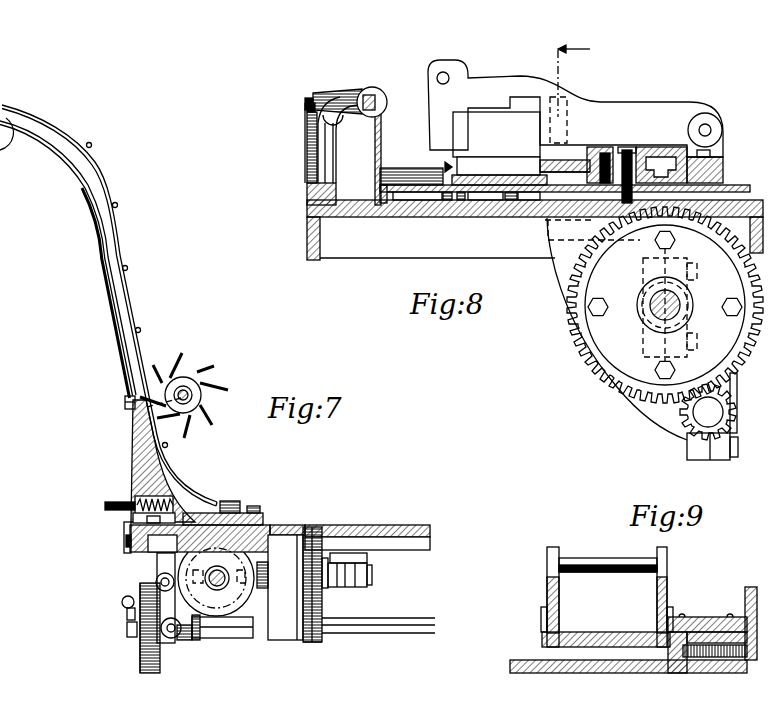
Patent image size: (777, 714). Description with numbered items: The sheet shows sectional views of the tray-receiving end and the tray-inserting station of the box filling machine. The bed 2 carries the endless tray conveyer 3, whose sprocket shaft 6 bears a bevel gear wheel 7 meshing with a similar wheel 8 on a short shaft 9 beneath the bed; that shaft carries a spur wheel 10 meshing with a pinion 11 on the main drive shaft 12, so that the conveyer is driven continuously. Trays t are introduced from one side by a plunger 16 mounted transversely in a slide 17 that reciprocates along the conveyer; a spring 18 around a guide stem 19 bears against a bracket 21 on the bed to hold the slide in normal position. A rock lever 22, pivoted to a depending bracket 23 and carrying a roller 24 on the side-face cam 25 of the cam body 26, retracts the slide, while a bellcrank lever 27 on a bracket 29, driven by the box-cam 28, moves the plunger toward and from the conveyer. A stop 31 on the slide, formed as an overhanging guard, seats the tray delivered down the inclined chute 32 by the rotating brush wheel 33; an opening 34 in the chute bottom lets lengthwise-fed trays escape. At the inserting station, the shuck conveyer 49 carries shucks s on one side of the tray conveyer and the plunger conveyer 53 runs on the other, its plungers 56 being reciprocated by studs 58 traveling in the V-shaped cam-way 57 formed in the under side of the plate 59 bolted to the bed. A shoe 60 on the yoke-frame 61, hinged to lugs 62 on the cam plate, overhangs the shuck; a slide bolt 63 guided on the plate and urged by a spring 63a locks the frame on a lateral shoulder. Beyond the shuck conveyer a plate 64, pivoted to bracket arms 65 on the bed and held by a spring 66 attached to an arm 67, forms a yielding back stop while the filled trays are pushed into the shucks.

In FIG. 7, the bed 2 is at (350, 525).
In FIG. 8, the bed 2 is at (307, 228).
In FIG. 8, the tray conveyer 3 is at (493, 157).
In FIG. 7, the shaft 6 is at (217, 584).
In FIG. 7, the bevel gear wheel 7 is at (240, 603).
In FIG. 7, the bevel gear wheel 8 is at (260, 600).
In FIG. 7, the short shaft 9 is at (374, 580).
In FIG. 8, the short shaft 9 is at (681, 307).
In FIG. 7, the spur wheel 10 is at (315, 527).
In FIG. 8, the spur wheel 10 is at (574, 279).
In FIG. 7, the pinion 11 is at (317, 642).
In FIG. 8, the pinion 11 is at (682, 409).
In FIG. 7, the main drive shaft 12 is at (397, 618).
In FIG. 8, the main drive shaft 12 is at (700, 412).
In FIG. 7, the plunger 16 is at (233, 501).
In FIG. 7, the slide 17 is at (265, 515).
In FIG. 7, the spring 18 is at (147, 490).
In FIG. 7, the guide stem 19 is at (117, 501).
In FIG. 7, the bracket 21 is at (125, 513).
In FIG. 7, the rock lever 22 is at (148, 551).
In FIG. 7, the depending bracket 23 is at (183, 640).
In FIG. 7, the roller 24 is at (171, 638).
In FIG. 7, the side-face cam 25 is at (157, 598).
In FIG. 7, the cam body 26 is at (152, 673).
In FIG. 7, the bellcrank lever 27 is at (126, 612).
In FIG. 7, the box-cam 28 is at (146, 657).
In FIG. 7, the depending bracket 29 is at (235, 638).
In FIG. 7, the stop 31 is at (240, 505).
In FIG. 7, the inclined chute 32 is at (121, 243).
In FIG. 7, the brush wheel 33 is at (193, 375).
In FIG. 7, the opening 34 is at (58, 152).
In FIG. 8, the shuck conveyer 49 is at (413, 200).
In FIG. 8, the plunger conveyer 53 is at (540, 220).
In FIG. 8, the plunger 56 is at (480, 198).
In FIG. 8, the cam-way 57 is at (606, 150).
In FIG. 8, the stud 58 is at (621, 150).
In FIG. 8, the plate 59 is at (725, 162).
In FIG. 9, the plate 59 is at (657, 673).
In FIG. 8, the shoe 60 is at (418, 166).
In FIG. 8, the yoke-frame 61 is at (653, 101).
In FIG. 9, the yoke-frame 61 is at (668, 592).
In FIG. 8, the lug 62 is at (708, 113).
In FIG. 8, the slide bolt 63 is at (577, 83).
In FIG. 9, the slide bolt 63 is at (700, 617).
In FIG. 9, the spring 63a is at (728, 661).
In FIG. 8, the plate 64 is at (377, 160).
In FIG. 8, the bracket arm 65 is at (318, 168).
In FIG. 8, the spring 66 is at (305, 135).
In FIG. 8, the arm 67 is at (345, 92).
In FIG. 8, the box shuck s is at (387, 195).
In FIG. 8, the match tray t is at (377, 172).